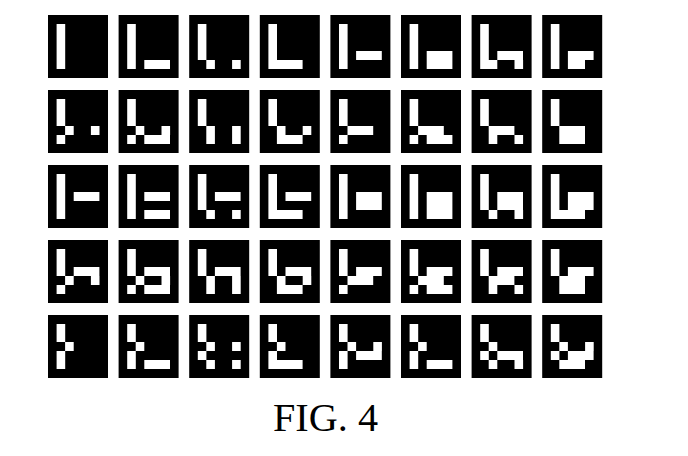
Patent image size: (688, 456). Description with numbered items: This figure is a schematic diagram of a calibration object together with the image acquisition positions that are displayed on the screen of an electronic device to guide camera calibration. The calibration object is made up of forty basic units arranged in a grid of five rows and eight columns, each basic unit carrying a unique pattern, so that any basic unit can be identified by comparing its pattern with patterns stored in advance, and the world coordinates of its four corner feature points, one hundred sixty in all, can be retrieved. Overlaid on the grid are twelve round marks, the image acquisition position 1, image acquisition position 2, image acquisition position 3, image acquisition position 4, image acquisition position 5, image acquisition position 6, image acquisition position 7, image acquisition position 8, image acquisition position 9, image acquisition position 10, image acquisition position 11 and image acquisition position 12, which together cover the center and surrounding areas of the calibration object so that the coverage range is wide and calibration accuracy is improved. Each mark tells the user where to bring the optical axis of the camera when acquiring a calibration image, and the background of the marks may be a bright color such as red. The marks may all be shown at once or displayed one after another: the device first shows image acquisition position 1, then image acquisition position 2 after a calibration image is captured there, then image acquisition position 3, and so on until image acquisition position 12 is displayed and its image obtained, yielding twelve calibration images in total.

The image acquisition position 1 is at (302, 196).
The image acquisition position 2 is at (302, 46).
The image acquisition position 3 is at (443, 46).
The image acquisition position 4 is at (516, 46).
The image acquisition position 5 is at (516, 196).
The image acquisition position 6 is at (516, 346).
The image acquisition position 7 is at (443, 346).
The image acquisition position 8 is at (302, 346).
The image acquisition position 9 is at (159, 346).
The image acquisition position 10 is at (89, 346).
The image acquisition position 11 is at (89, 196).
The image acquisition position 12 is at (89, 46).